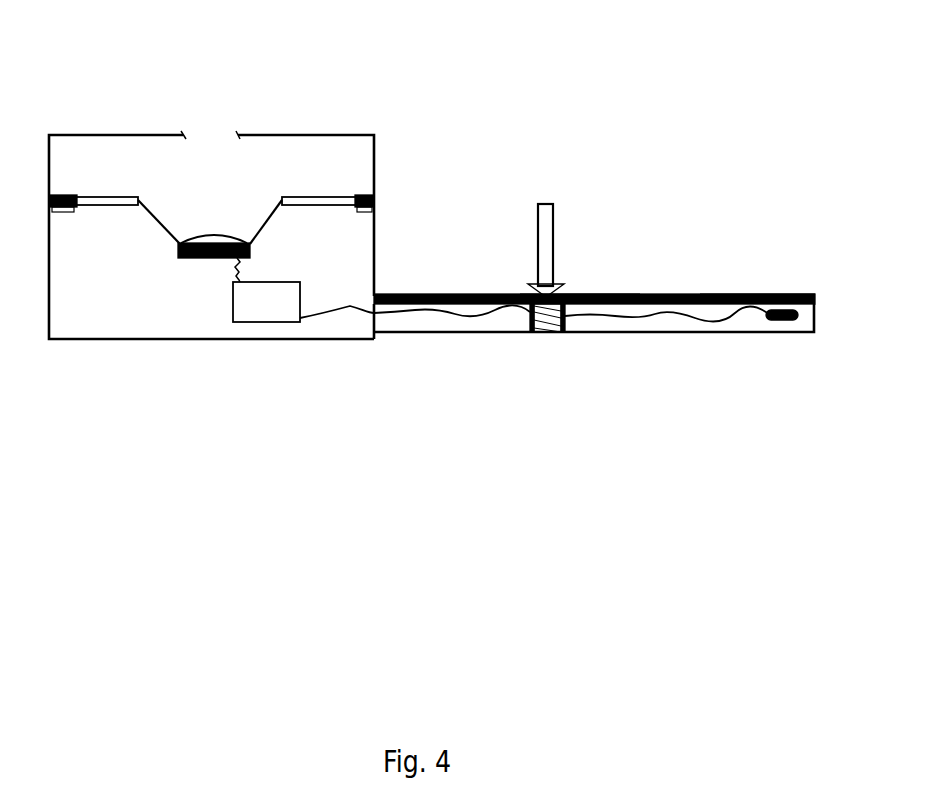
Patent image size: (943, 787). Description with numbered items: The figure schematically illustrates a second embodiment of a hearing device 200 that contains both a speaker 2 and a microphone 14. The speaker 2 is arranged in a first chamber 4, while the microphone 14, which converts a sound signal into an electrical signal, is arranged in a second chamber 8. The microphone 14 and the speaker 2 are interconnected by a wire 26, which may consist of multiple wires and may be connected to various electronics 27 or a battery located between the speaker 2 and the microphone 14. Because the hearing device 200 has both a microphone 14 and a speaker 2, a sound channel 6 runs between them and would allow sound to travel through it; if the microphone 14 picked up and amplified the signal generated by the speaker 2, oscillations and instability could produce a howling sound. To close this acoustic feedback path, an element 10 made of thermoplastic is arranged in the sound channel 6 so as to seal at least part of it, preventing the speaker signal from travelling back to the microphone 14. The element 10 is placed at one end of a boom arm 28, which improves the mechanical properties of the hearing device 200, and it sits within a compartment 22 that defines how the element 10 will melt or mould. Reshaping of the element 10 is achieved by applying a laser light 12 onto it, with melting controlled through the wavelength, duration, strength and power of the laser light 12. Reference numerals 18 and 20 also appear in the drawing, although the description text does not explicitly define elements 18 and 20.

The hearing device 200 is at (424, 102).
The speaker 2 is at (185, 258).
The first chamber 4 is at (113, 312).
The sound channel 6 is at (463, 324).
The second chamber 8 is at (635, 309).
The element 10 is at (62, 206).
The laser light 12 is at (556, 230).
The microphone 14 is at (762, 318).
The substrate 18 is at (628, 334).
The housing wall 20 is at (735, 298).
The compartment 22 is at (582, 293).
The wire 26 is at (350, 307).
The electronics 27 is at (265, 322).
The boom arm 28 is at (505, 294).